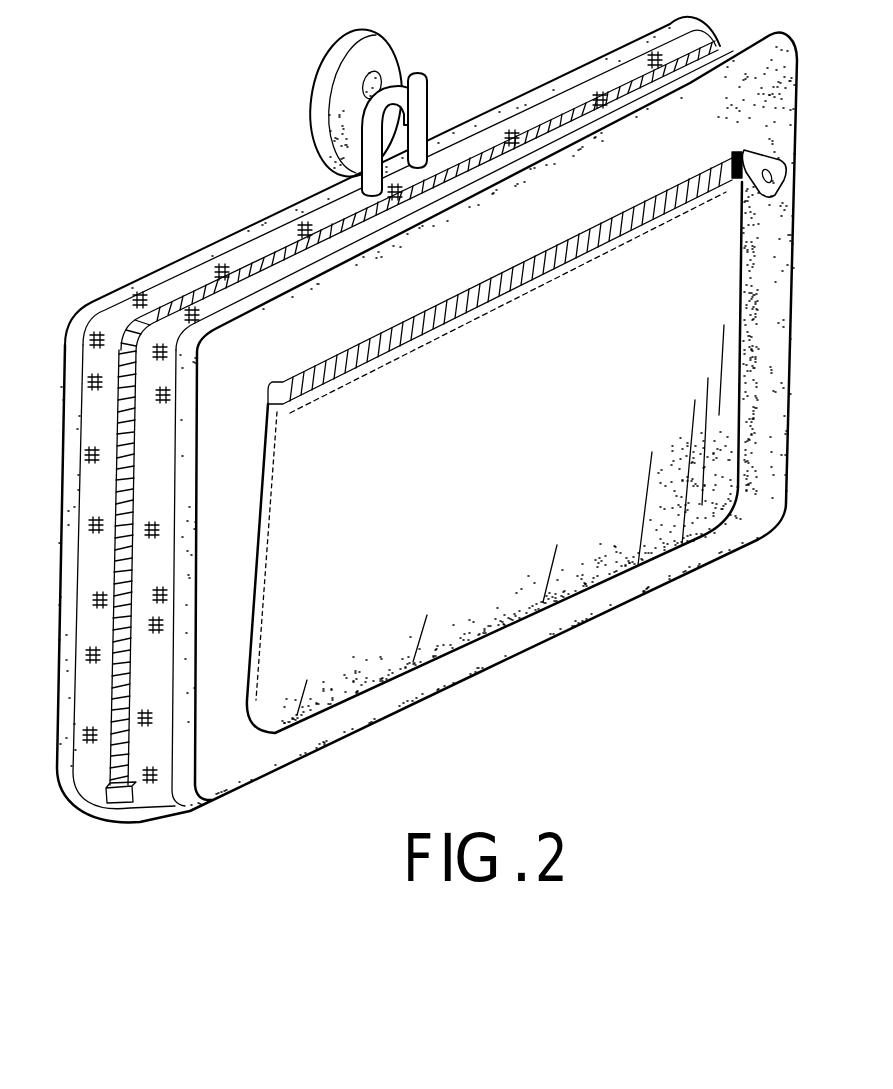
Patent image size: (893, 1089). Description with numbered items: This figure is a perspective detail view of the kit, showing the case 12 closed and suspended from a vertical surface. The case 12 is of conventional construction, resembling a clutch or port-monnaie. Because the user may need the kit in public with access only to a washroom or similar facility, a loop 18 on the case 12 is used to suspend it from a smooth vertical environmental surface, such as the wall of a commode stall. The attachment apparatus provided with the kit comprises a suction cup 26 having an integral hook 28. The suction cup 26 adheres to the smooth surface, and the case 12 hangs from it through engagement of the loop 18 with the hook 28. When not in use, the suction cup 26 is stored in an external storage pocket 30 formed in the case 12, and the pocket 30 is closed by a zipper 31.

The case 12 is at (134, 284).
The loop 18 is at (439, 114).
The suction cup 26 is at (316, 93).
The hook 28 is at (427, 93).
The external storage pocket 30 is at (502, 461).
The zipper 31 is at (745, 152).